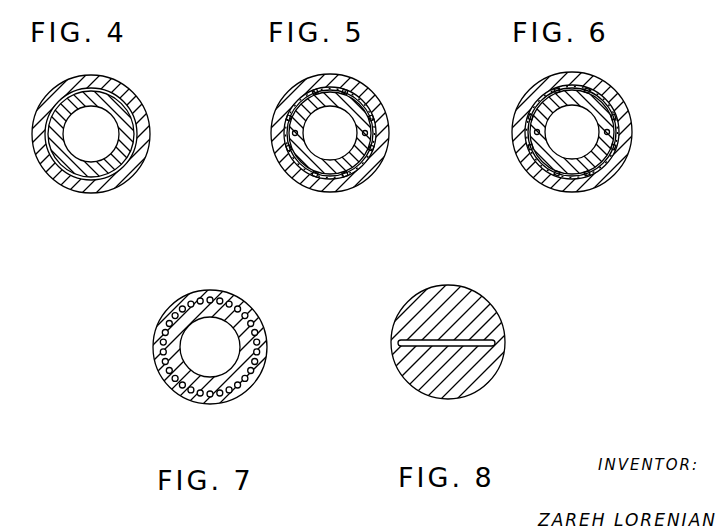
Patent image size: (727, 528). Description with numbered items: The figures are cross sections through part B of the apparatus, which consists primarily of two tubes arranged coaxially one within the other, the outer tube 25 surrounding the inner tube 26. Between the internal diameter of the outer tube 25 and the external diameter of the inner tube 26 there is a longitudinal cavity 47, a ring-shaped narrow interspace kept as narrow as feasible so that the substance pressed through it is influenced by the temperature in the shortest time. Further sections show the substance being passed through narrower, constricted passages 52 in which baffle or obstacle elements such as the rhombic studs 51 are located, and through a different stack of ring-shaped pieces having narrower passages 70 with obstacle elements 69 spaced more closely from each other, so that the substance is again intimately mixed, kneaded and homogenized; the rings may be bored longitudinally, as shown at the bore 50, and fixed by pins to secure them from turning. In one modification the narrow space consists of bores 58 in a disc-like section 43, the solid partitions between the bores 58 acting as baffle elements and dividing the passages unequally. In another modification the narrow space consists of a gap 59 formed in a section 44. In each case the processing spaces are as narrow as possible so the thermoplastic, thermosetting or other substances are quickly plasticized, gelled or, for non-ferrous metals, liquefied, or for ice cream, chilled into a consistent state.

In FIG. 4, the outer tube 25 is at (148, 137).
In FIG. 5, the outer tube 25 is at (302, 83).
In FIG. 6, the outer tube 25 is at (529, 101).
In FIG. 4, the inner tube 26 is at (121, 157).
In FIG. 5, the inner tube 26 is at (372, 112).
In FIG. 6, the inner tube 26 is at (607, 143).
In FIG. 4, the longitudinal cavity 47 is at (137, 103).
In FIG. 5, the bore 50 is at (363, 133).
In FIG. 6, the bore 50 is at (605, 132).
In FIG. 5, the rhombic studs 51 is at (380, 157).
In FIG. 5, the constricted passages 52 is at (290, 148).
In FIG. 6, the obstacle elements 69 is at (598, 172).
In FIG. 6, the narrower passages 70 is at (571, 150).
In FIG. 7, the perforated disc 43 is at (177, 387).
In FIG. 7, the bores 58 is at (196, 298).
In FIG. 8, the slotted disc 44 is at (447, 390).
In FIG. 8, the gap 59 is at (493, 342).